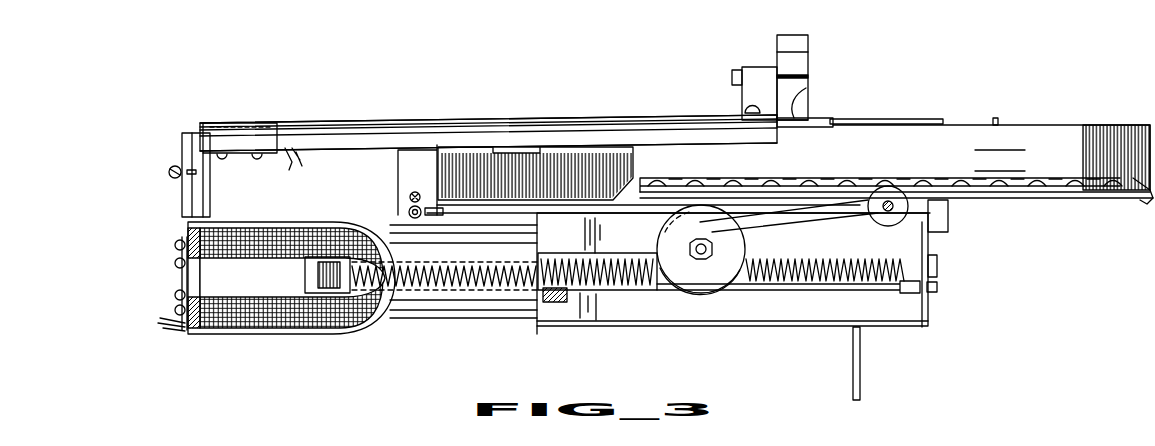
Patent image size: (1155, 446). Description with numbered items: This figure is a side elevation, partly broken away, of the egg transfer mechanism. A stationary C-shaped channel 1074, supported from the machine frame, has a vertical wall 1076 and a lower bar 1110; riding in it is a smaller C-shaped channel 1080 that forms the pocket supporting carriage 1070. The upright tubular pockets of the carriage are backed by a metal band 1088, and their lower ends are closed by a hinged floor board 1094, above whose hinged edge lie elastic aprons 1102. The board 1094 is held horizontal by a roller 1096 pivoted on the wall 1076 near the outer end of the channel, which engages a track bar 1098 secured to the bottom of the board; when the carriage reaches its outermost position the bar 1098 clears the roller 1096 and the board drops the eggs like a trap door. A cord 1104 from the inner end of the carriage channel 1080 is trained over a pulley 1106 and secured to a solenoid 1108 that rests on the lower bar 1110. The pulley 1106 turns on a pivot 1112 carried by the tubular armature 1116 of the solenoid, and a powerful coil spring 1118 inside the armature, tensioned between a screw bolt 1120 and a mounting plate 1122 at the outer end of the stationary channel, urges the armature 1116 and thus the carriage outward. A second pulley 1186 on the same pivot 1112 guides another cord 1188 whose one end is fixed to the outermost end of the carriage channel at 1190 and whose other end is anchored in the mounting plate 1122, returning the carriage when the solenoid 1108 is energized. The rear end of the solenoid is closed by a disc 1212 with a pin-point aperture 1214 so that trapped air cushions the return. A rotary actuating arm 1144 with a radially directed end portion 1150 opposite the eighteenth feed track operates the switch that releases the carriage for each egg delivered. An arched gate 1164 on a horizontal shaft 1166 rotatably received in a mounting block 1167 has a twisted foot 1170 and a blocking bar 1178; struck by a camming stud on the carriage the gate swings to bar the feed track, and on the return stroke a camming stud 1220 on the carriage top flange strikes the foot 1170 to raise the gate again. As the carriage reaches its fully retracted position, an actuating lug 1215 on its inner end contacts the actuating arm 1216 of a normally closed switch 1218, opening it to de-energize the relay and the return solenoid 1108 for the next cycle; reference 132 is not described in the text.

The sheet feeding apparatus 132 is at (576, 96).
The pocket supporting carriage 1070 is at (1060, 126).
The channel 1074 is at (411, 118).
The vertical wall 1076 is at (376, 118).
The channel 1080 is at (437, 162).
The metal band 1088 is at (1000, 141).
The board 1094 is at (1000, 162).
The roller 1096 is at (906, 216).
The track bar 1098 is at (1050, 187).
The aprons 1102 is at (740, 178).
The cord 1104 is at (598, 207).
The pulley 1106 is at (729, 230).
The solenoid 1108 is at (525, 320).
The lower bar 1110 is at (476, 333).
The pivot 1112 is at (714, 247).
The tubular armature 1116 is at (599, 252).
The coil spring 1118 is at (890, 257).
The screw bolt 1120 is at (305, 272).
The mounting plate 1122 is at (930, 308).
The rotary actuating arm 1144 is at (826, 134).
The radially directed end portion 1150 is at (835, 114).
The arched gate 1164 is at (817, 71).
The horizontal shaft 1166 is at (807, 73).
The mounting block 1167 is at (744, 97).
The foot 1170 is at (800, 112).
The bar 1178 is at (808, 50).
The pulley 1186 is at (683, 291).
The cord 1188 is at (797, 290).
The point of attachment of cord to carriage channel 1190 is at (1133, 203).
The disc 1212 is at (182, 297).
The aperture 1214 is at (182, 277).
The actuating lug 1215 is at (398, 175).
The actuating arm 1216 is at (194, 133).
The switch 1218 is at (240, 155).
The camming stud 1220 is at (998, 118).